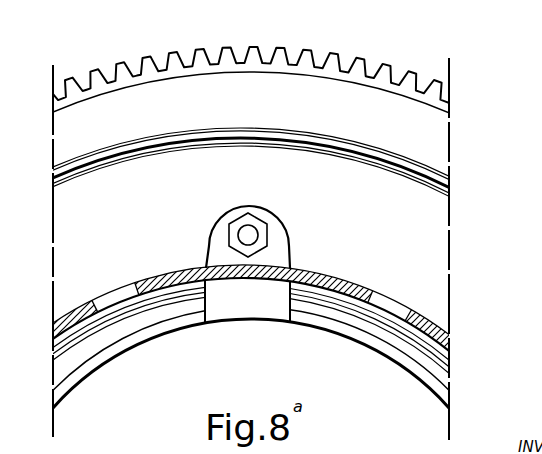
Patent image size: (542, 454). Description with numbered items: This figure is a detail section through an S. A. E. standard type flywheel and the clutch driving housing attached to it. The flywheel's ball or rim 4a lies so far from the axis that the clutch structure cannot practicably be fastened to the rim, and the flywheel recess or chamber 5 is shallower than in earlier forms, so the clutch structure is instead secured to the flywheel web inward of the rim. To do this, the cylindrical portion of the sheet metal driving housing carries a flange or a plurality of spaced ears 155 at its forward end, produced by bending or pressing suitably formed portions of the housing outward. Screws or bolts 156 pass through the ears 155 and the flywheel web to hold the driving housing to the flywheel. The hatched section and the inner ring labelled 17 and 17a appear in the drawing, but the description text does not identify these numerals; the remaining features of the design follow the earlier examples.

The flywheel rim 4a is at (420, 126).
The flywheel recess 5 is at (417, 220).
The hatched plate 17 is at (328, 273).
The inner ring 17a is at (161, 328).
The spaced ears 155 is at (278, 235).
The screws or bolts 156 is at (243, 234).